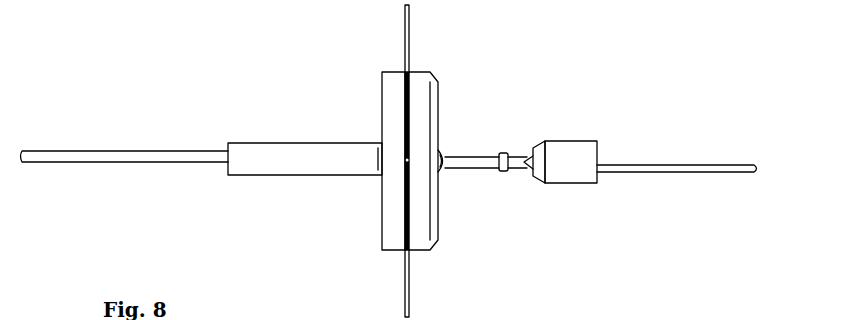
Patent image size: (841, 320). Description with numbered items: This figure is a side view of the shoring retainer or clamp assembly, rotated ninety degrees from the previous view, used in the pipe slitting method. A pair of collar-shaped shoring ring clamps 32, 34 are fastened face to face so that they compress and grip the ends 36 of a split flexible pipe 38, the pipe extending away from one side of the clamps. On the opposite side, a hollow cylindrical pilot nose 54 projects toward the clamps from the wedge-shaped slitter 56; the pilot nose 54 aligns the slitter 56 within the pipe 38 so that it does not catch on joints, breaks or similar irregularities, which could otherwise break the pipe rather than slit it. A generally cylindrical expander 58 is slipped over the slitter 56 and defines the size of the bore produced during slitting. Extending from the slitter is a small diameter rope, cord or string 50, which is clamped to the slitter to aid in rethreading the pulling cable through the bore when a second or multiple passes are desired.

The shoring ring clamp 32 is at (392, 72).
The shoring ring clamp 34 is at (420, 72).
The ends of split flexible pipe 36 is at (410, 22).
The split flexible pipe 38 is at (306, 148).
The rope, cord or string 50 is at (728, 171).
The slitter pilot nose 54 is at (507, 153).
The wedge-shaped slitter 56 is at (530, 167).
The expander 58 is at (568, 141).